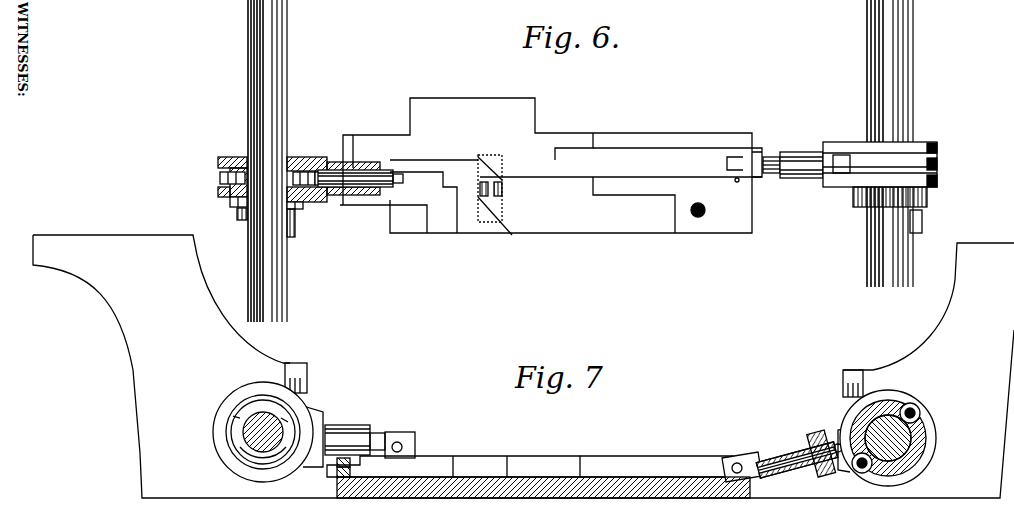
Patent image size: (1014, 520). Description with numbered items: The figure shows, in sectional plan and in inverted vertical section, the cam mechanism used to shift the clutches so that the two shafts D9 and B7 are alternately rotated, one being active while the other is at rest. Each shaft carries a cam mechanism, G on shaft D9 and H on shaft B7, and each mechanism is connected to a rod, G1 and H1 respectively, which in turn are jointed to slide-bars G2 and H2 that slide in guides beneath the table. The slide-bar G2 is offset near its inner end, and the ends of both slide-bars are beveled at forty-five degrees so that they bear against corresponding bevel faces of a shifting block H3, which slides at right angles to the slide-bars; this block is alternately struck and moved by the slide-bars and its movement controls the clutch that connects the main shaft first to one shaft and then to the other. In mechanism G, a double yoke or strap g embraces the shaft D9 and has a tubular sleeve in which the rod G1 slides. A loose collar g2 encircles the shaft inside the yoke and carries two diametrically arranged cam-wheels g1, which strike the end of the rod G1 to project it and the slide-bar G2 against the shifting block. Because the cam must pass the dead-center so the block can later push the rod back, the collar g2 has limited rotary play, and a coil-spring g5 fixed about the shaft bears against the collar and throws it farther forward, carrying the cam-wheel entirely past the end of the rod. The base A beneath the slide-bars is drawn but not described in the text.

In FIG. 6, the shaft D9 is at (290, 73).
In FIG. 6, the shaft B7 is at (916, 83).
In FIG. 6, the cam mechanism G is at (228, 157).
In FIG. 7, the cam mechanism G is at (296, 420).
In FIG. 6, the cam-wheel g1 is at (220, 178).
In FIG. 6, the loose collar g2 is at (232, 203).
In FIG. 6, the coil-spring g5 is at (240, 220).
In FIG. 7, the coil-spring g5 is at (240, 443).
In FIG. 6, the double yoke or strap g is at (312, 195).
In FIG. 7, the double yoke or strap g is at (286, 468).
In FIG. 6, the rod G1 is at (378, 170).
In FIG. 7, the rod G1 is at (370, 441).
In FIG. 6, the slide-bar G2 is at (546, 165).
In FIG. 7, the slide-bar G2 is at (453, 466).
In FIG. 6, the shifting block H3 is at (505, 200).
In FIG. 6, the slide-bar H2 is at (621, 183).
In FIG. 7, the slide-bar H2 is at (656, 466).
In FIG. 6, the rod H1 is at (770, 152).
In FIG. 7, the rod H1 is at (782, 459).
In FIG. 6, the cam mechanism H is at (882, 178).
In FIG. 7, the cam mechanism H is at (918, 424).
In FIG. 7, the bed A is at (712, 498).